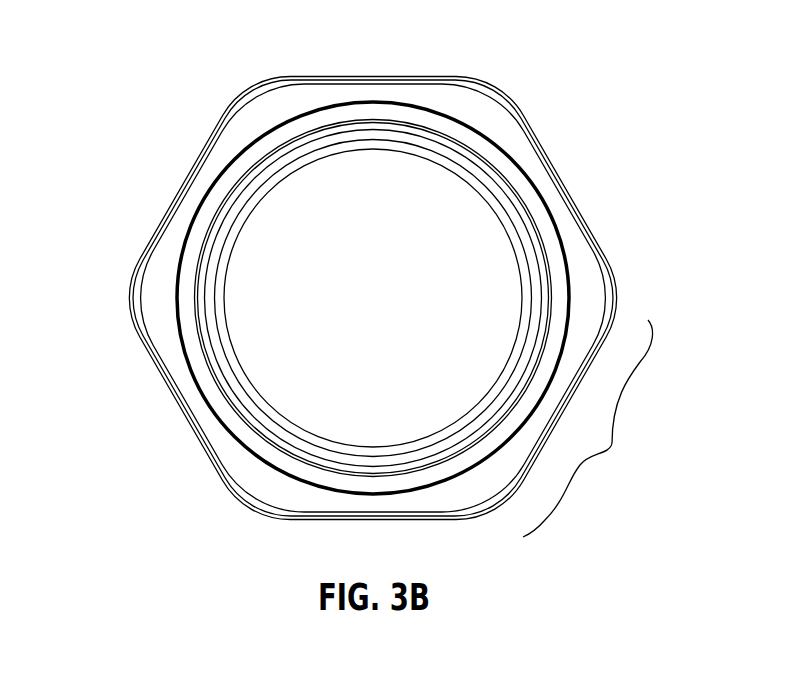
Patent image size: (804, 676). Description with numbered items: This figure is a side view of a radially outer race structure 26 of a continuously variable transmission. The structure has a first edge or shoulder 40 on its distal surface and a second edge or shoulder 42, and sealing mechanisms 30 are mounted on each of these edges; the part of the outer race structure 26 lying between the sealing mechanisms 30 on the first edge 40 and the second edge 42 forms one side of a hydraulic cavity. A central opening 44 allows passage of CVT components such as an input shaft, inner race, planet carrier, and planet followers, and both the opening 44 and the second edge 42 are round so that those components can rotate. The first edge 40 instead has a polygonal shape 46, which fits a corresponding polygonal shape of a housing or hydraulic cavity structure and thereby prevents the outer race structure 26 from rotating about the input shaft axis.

The first edge or shoulder 40 is at (440, 75).
The radially outer race structure 26 is at (487, 112).
The sealing mechanisms 30 is at (580, 203).
The second edge or shoulder 42 is at (307, 148).
The opening 44 is at (262, 305).
The polygonal shape 46 is at (588, 428).